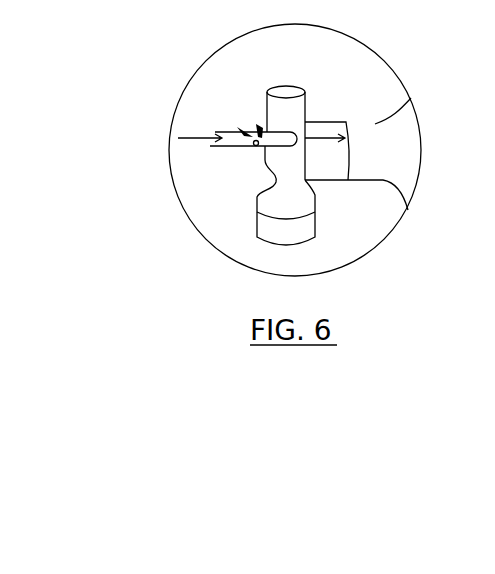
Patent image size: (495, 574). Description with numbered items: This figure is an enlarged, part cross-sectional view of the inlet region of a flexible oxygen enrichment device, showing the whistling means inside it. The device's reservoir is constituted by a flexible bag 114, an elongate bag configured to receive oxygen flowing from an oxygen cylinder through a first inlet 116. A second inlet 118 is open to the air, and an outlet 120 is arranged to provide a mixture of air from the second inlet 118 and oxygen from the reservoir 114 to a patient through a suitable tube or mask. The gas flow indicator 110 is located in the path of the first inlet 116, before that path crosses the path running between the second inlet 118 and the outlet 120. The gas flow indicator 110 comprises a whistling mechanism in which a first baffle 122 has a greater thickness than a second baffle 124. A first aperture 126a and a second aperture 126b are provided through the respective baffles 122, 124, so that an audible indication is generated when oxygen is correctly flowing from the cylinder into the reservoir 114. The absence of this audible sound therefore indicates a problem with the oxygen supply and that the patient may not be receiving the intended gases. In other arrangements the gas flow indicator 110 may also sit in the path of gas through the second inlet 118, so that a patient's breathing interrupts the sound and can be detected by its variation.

The gas flow indicator 110 is at (218, 127).
The flexible bag reservoir 114 is at (382, 138).
The first inlet 116 is at (250, 147).
The second inlet 118 is at (292, 107).
The outlet 120 is at (303, 198).
The first baffle 122 is at (256, 146).
The second baffle 124 is at (255, 195).
The first aperture 126a is at (243, 132).
The second aperture 126b is at (258, 127).